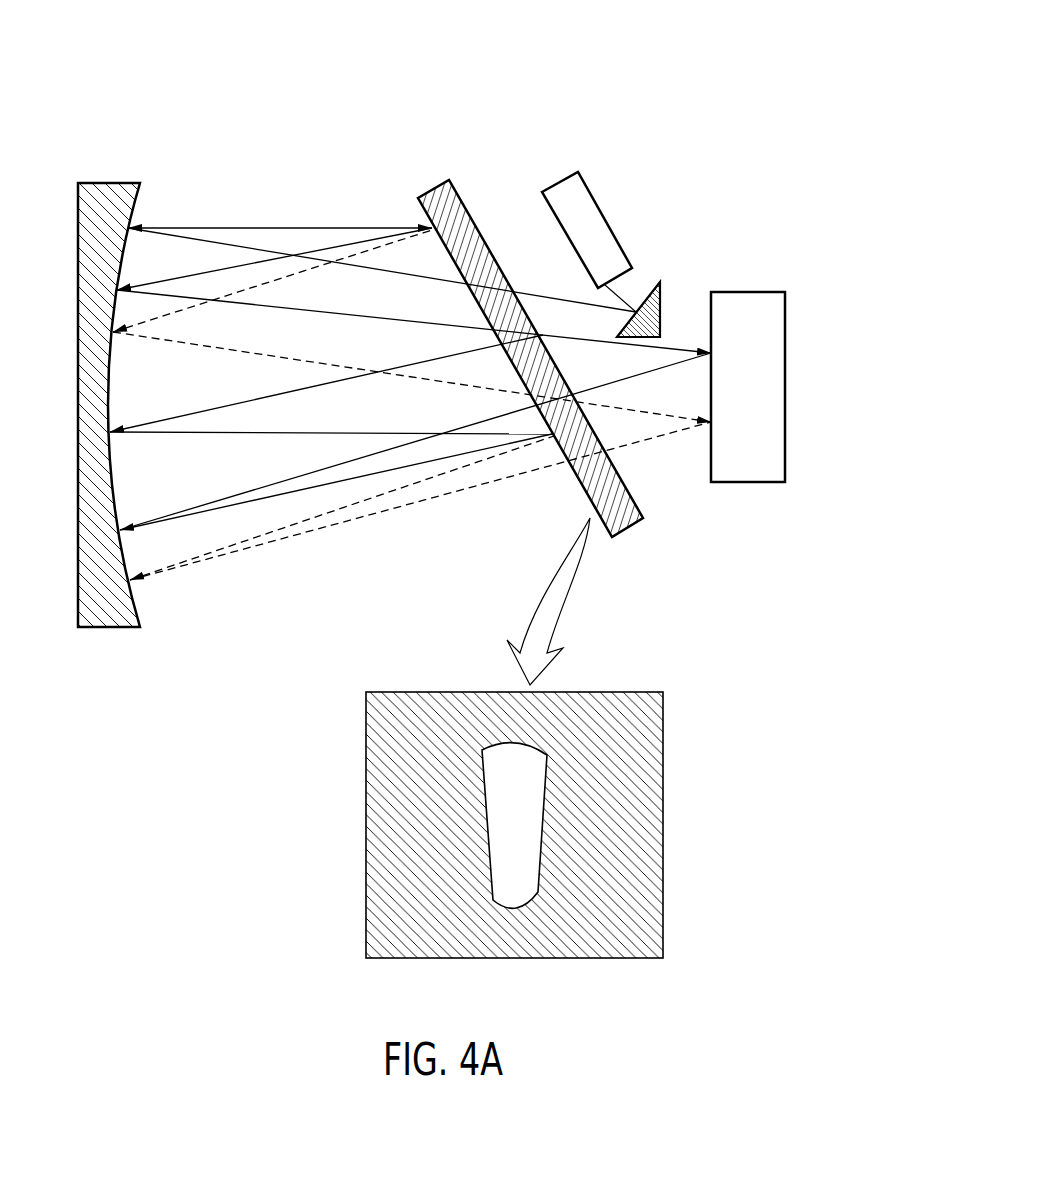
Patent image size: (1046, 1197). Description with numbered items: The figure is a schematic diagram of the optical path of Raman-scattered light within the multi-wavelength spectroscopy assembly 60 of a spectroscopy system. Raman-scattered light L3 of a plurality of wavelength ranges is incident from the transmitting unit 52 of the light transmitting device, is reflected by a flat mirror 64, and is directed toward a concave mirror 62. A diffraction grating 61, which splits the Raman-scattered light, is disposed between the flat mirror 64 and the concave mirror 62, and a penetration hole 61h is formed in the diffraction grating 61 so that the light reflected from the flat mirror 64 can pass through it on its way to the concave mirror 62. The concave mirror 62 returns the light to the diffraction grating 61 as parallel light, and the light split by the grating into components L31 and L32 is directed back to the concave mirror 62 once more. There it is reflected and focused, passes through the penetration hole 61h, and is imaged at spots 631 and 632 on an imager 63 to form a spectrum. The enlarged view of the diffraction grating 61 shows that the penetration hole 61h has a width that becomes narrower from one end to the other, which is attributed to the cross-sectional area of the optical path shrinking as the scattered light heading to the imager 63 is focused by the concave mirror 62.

The multi-wavelength spectroscopy assembly 60 is at (722, 96).
The diffraction grating 61 is at (432, 196).
The penetration hole 61h is at (523, 807).
The concave mirror 62 is at (110, 182).
The imager 63 is at (752, 292).
The image of first split light 631 is at (711, 353).
The image of second split light 632 is at (711, 422).
The flat mirror 64 is at (661, 283).
The transmitting unit 52 is at (599, 207).
The Raman-scattered light L3 is at (543, 296).
The first split Raman-scattered light L31 is at (167, 280).
The second split Raman-scattered light L32 is at (260, 354).